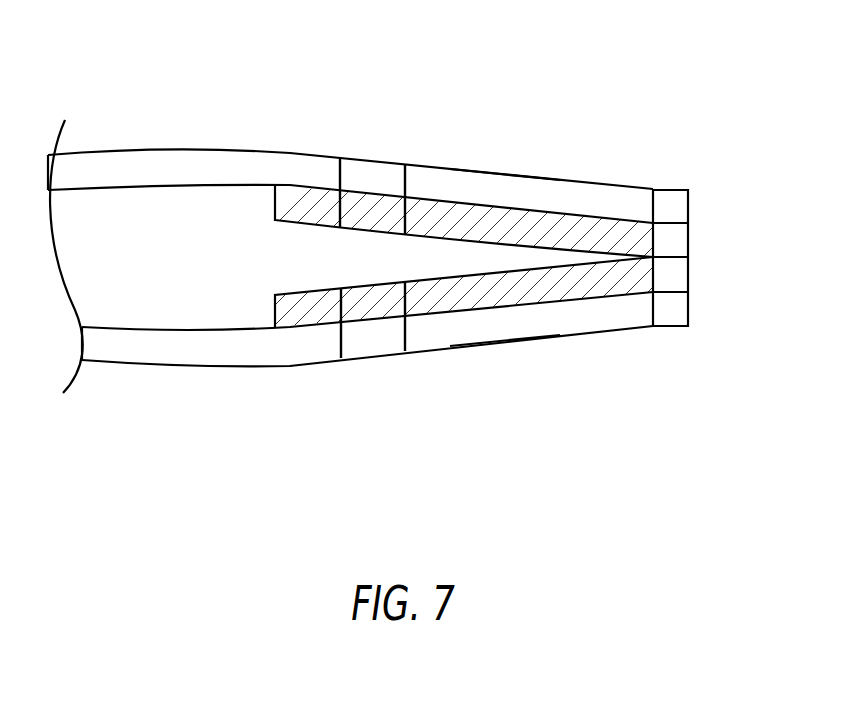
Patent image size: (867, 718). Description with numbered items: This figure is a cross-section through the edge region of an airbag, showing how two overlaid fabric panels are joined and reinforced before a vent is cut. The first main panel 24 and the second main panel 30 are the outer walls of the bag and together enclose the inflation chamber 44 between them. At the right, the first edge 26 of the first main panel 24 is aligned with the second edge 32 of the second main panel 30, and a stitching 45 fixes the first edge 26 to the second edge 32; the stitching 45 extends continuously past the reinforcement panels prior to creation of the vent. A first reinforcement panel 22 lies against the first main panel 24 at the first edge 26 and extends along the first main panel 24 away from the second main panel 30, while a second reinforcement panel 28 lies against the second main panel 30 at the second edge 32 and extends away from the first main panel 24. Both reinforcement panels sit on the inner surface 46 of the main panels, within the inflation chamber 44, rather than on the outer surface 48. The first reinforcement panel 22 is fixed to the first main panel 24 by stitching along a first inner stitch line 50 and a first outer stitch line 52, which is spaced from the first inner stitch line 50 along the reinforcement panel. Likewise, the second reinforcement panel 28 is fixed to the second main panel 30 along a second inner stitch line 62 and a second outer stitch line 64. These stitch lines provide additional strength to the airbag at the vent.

The first reinforcement panel 22 is at (553, 233).
The first main panel 24 is at (243, 170).
The first edge 26 is at (688, 203).
The second reinforcement panel 28 is at (553, 282).
The second main panel 30 is at (243, 345).
The second edge 32 is at (688, 312).
The inflation chamber 44 is at (147, 245).
The stitching 45 is at (657, 277).
The inner surface 46 is at (165, 190).
The outer surface 48 is at (492, 172).
The first inner stitch line 50 is at (405, 185).
The first outer stitch line 52 is at (340, 158).
The second inner stitch line 62 is at (405, 325).
The second outer stitch line 64 is at (340, 337).